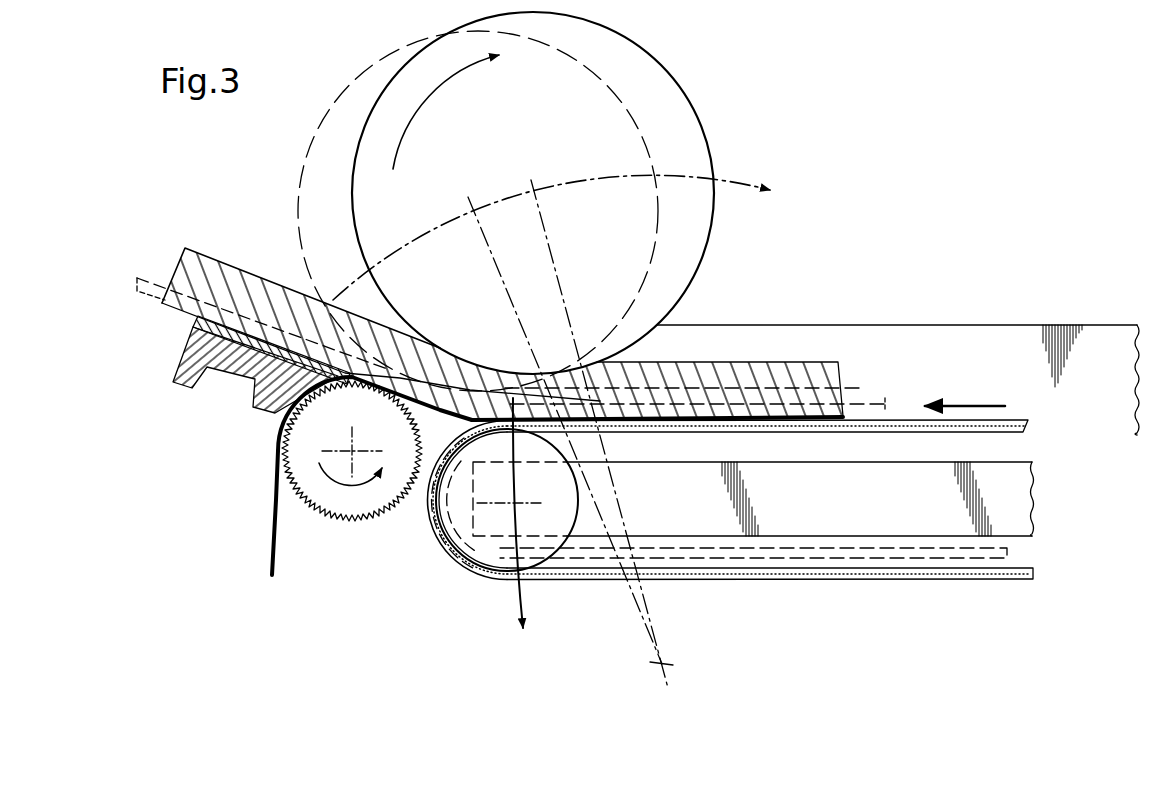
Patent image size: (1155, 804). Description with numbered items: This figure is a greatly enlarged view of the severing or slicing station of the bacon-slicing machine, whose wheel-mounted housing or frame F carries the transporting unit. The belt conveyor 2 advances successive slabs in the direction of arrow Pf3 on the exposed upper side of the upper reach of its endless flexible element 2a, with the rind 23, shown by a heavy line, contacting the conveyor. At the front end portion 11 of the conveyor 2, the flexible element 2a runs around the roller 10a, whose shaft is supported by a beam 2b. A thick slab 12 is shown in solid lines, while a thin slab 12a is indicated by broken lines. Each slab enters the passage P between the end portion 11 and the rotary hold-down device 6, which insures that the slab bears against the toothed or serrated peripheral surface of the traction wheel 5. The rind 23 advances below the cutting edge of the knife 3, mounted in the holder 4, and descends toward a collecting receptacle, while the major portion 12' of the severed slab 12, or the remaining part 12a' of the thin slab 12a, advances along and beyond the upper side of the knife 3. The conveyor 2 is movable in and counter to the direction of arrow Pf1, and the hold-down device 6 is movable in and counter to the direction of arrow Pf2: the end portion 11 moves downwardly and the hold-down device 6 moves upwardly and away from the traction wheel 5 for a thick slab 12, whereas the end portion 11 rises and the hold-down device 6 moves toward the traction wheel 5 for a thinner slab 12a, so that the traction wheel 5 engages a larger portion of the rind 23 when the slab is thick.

The belt conveyor 2 is at (678, 583).
The endless flexible element 2a is at (860, 573).
The beam 2b is at (1034, 482).
The knife 3 is at (357, 387).
The holder 4 is at (200, 389).
The traction wheel 5 is at (273, 452).
The rotary member (hold-down device) 6 is at (362, 74).
The roller 10a is at (440, 503).
The front end portion 11 is at (425, 582).
The slab 12 is at (641, 375).
The thin slab 12a is at (715, 375).
The major portion of severed slab 12' is at (381, 313).
The remaining part of thin slab 12a' is at (246, 307).
The rind 23 is at (279, 538).
The passage P is at (537, 373).
The arrow Pf1 is at (517, 602).
The arrow Pf2 is at (543, 188).
The arrow Pf3 is at (982, 404).
The frame F is at (971, 319).